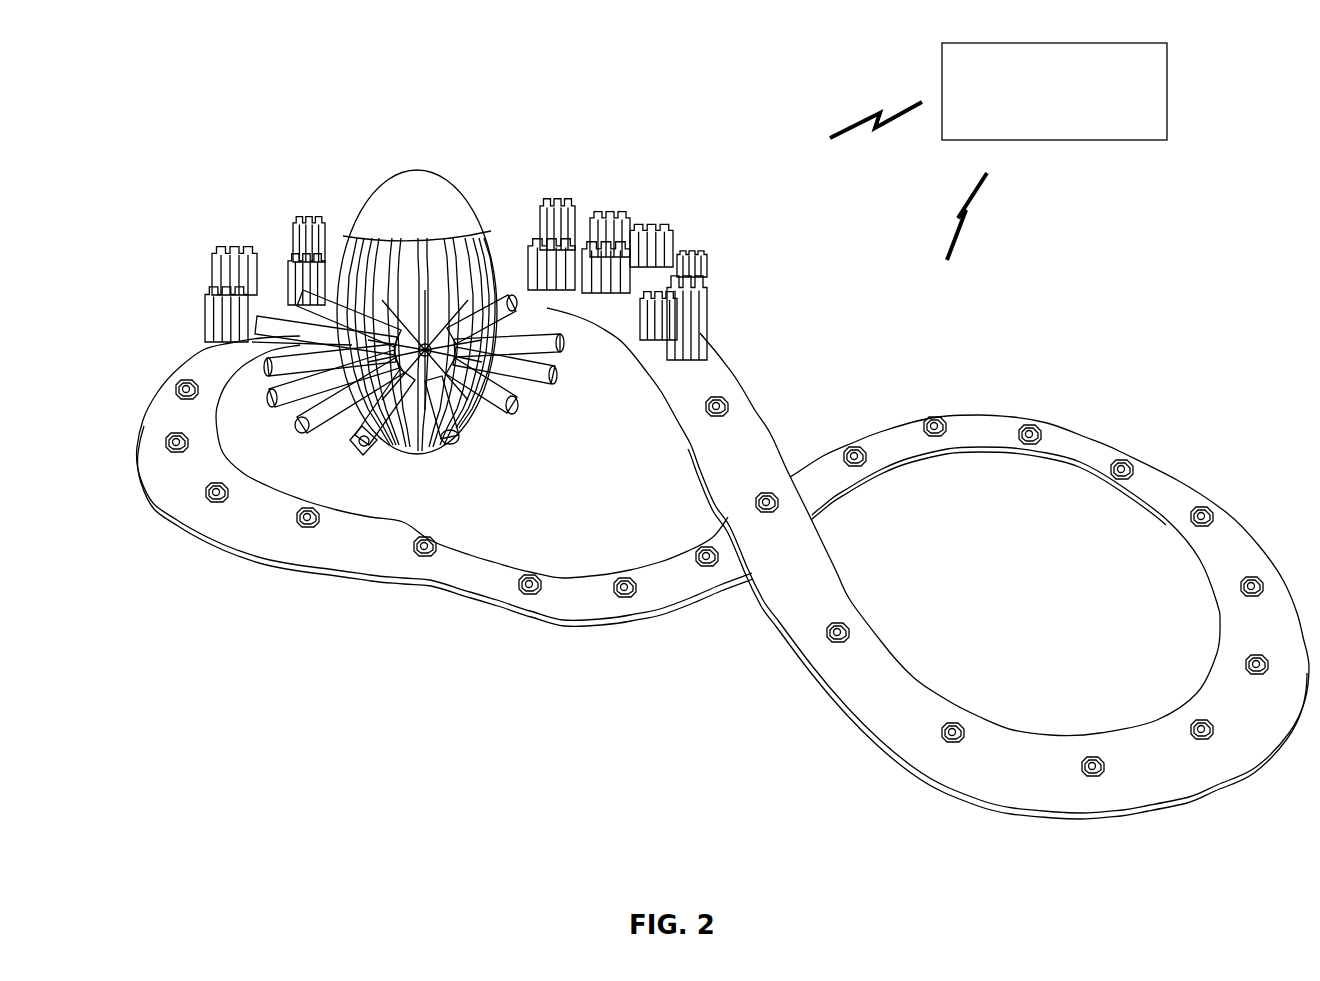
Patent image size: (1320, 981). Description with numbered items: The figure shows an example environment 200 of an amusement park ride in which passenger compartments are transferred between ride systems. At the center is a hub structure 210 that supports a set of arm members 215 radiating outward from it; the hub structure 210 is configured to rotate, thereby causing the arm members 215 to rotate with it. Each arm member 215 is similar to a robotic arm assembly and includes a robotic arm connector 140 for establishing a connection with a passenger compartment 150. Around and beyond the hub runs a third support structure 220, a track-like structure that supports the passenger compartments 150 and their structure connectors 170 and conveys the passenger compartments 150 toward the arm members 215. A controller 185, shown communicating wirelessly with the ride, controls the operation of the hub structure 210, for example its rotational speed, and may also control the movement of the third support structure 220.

The environment 200 is at (183, 40).
The passenger compartment 150 is at (237, 265).
The hub structure 210 is at (393, 203).
The arm member 215 is at (273, 360).
The third support structure 220 is at (170, 402).
The robotic arm connector 140 is at (360, 443).
The structure connector 170 is at (416, 550).
The controller 185 is at (998, 151).